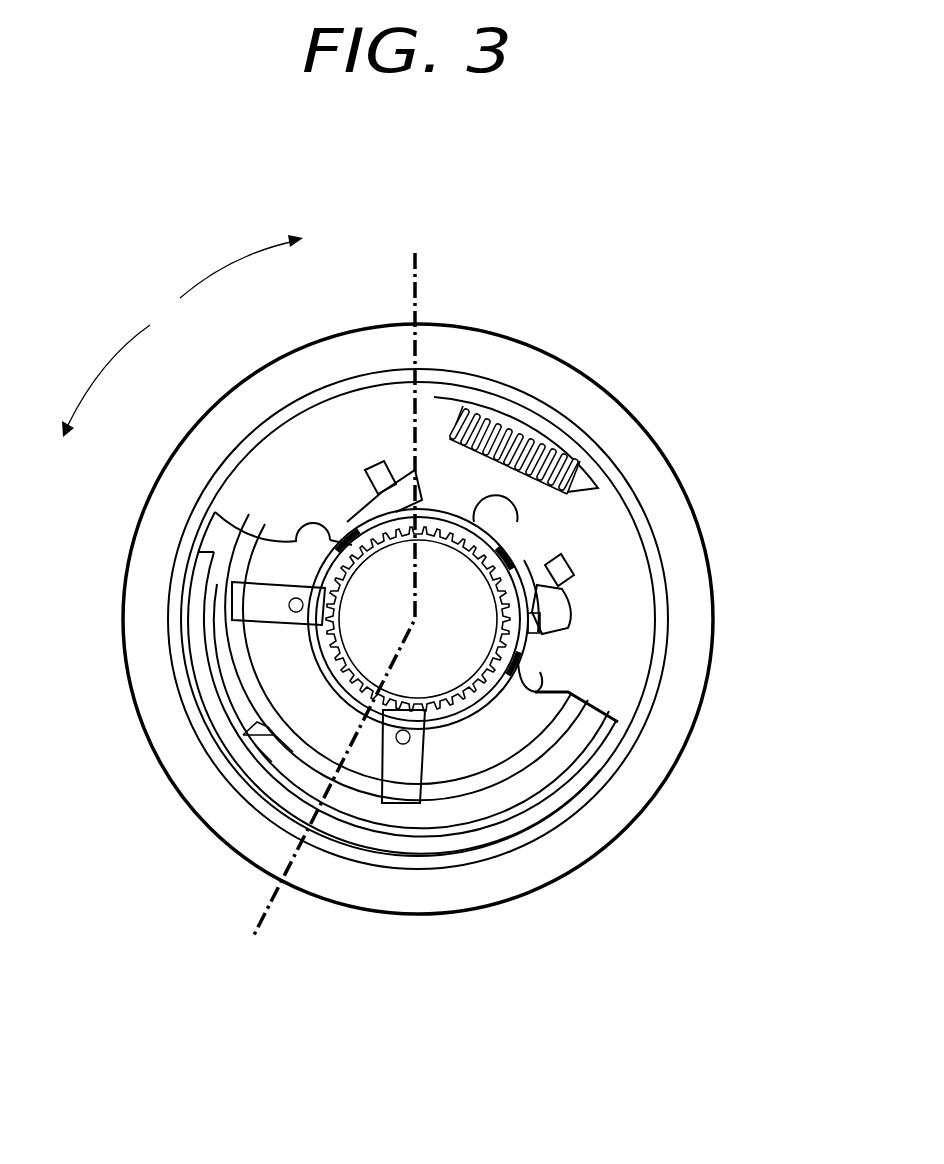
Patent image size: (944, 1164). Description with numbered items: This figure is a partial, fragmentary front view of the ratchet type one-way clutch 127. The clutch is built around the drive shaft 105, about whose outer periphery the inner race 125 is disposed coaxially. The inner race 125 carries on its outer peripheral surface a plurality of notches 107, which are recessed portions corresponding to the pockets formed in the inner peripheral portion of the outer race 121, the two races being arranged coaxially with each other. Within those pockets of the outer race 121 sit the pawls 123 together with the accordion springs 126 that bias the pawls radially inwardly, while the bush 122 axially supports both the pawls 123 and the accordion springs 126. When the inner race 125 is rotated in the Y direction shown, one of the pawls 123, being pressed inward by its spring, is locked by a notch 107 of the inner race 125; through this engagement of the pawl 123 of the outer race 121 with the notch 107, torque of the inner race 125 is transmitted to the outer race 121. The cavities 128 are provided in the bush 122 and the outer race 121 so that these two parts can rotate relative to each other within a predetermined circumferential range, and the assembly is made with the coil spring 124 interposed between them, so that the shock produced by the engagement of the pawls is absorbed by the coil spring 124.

The one-way clutch 127 is at (646, 205).
The outer race 121 is at (630, 641).
The cavities 128 is at (502, 415).
The coil spring 124 is at (545, 442).
The bush 122 is at (498, 755).
The notches 107 is at (527, 563).
The drive shaft 105 is at (490, 635).
The inner race 125 is at (370, 525).
The accordion springs 126 is at (568, 560).
The pawls 123 is at (557, 610).